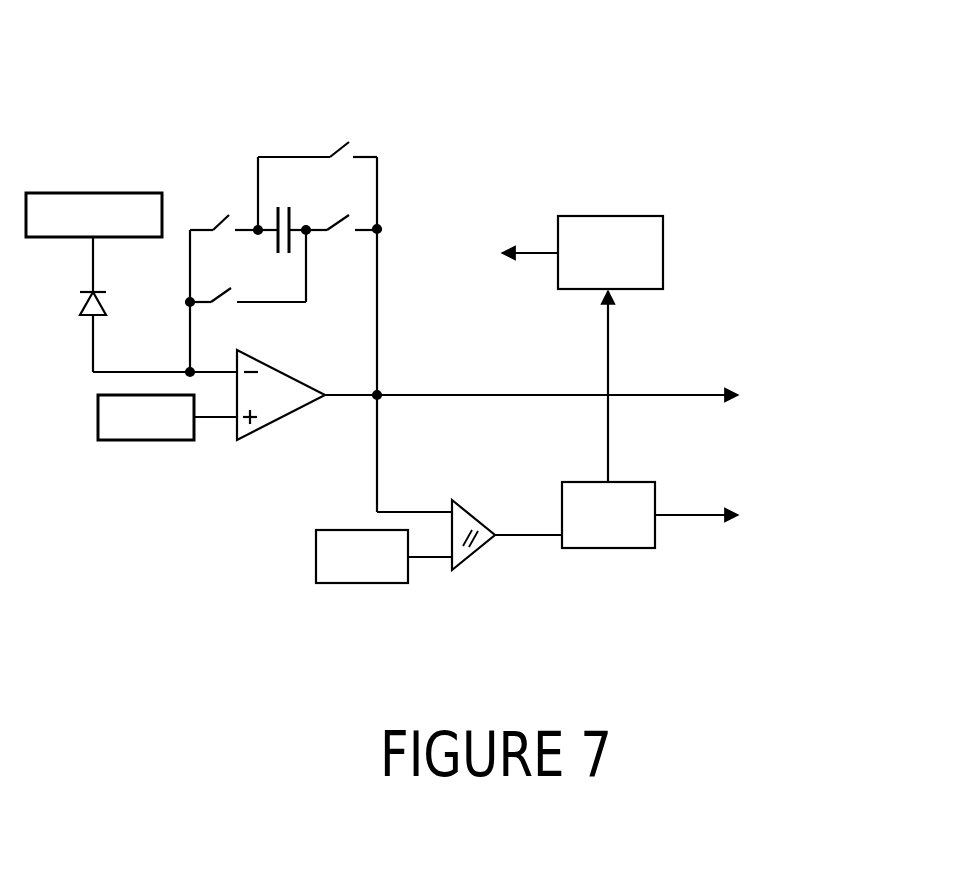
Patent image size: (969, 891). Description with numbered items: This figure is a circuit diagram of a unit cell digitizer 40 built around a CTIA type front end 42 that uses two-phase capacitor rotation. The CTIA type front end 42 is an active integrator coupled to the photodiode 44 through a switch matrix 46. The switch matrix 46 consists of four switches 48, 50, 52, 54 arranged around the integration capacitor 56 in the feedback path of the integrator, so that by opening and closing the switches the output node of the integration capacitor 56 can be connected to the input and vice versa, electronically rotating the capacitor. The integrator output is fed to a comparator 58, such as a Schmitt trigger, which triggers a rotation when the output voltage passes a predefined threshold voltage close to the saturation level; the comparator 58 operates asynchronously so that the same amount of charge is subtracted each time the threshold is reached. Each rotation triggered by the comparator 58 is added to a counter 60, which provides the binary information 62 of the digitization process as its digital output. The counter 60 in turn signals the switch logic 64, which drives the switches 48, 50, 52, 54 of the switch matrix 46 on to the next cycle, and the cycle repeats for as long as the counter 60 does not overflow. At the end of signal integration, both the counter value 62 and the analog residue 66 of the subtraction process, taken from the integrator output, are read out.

The unit cell digitizer 40 is at (86, 84).
The CTIA type front end 42 is at (282, 418).
The photodiode 44 is at (80, 304).
The switch matrix 46 is at (408, 188).
The switch 48 is at (240, 200).
The switch 50 is at (341, 240).
The switch 52 is at (232, 307).
The switch 54 is at (353, 141).
The integration capacitor 56 is at (284, 198).
The comparator 58 is at (470, 520).
The counter 60 is at (603, 552).
The binary information 62 is at (764, 518).
The switch logic 64 is at (610, 216).
The analog residue 66 is at (602, 398).